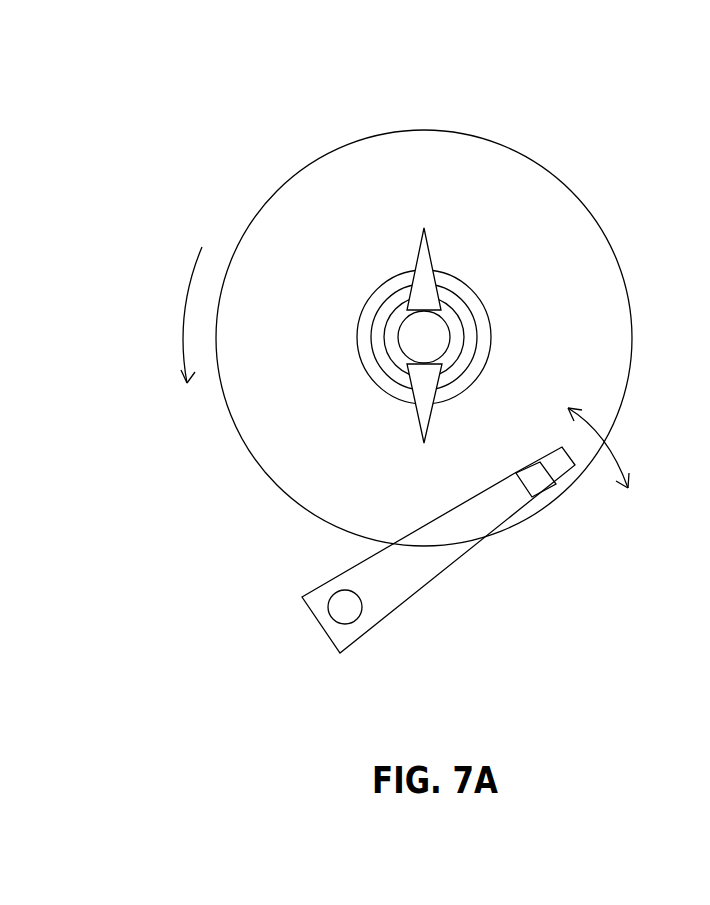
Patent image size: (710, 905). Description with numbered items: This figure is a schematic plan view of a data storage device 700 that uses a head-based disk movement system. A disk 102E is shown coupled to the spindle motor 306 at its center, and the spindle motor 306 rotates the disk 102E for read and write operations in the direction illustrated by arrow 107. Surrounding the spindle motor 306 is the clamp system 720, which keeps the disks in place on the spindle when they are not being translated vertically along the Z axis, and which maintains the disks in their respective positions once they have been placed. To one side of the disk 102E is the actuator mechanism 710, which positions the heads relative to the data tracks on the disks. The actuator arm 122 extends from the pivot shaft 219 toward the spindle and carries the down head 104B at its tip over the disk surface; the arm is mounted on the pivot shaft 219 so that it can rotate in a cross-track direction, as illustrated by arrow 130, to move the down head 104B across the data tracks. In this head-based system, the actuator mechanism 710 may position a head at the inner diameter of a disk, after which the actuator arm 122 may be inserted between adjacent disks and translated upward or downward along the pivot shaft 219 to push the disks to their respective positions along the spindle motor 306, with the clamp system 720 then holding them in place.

The data storage device 700 is at (203, 129).
The disk 102E is at (535, 183).
The spindle motor 306 is at (397, 329).
The clamp system 720 is at (443, 417).
The arrow indicating disk rotation 107 is at (185, 307).
The arrow indicating cross-track rotation 130 is at (620, 462).
The actuator arm 122 is at (442, 551).
The down head 104B is at (562, 463).
The pivot shaft 219 is at (338, 610).
The actuator mechanism 710 is at (382, 656).